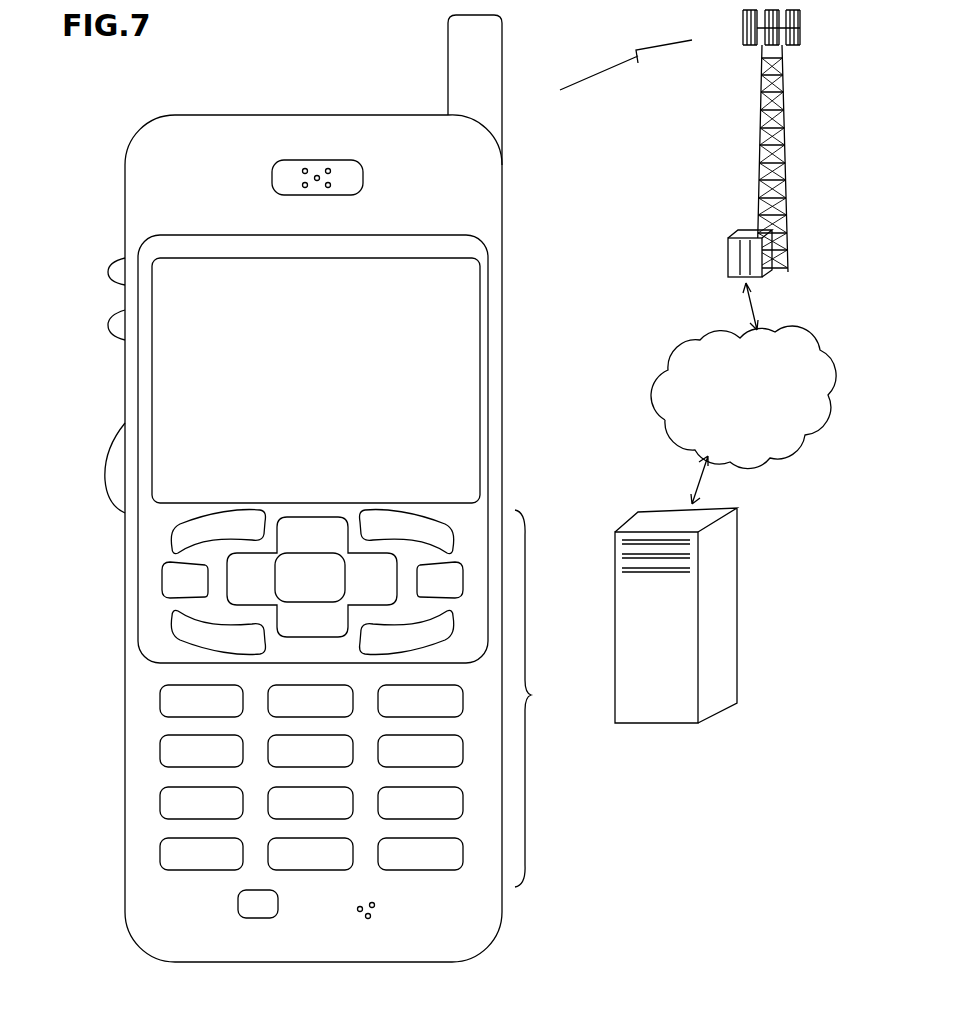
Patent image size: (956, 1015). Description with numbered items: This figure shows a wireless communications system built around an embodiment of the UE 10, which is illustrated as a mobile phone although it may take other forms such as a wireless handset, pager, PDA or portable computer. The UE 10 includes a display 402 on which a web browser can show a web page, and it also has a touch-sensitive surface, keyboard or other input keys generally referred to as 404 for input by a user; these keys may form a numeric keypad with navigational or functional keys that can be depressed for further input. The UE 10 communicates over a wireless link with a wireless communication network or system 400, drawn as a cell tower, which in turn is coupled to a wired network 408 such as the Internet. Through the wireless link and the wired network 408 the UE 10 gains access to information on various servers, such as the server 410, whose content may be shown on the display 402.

The UE 10 is at (162, 955).
The wireless communication network or system 400 is at (757, 157).
The display 402 is at (490, 268).
The input keys 404 is at (543, 698).
The wired network 408 is at (682, 443).
The server 410 is at (660, 728).